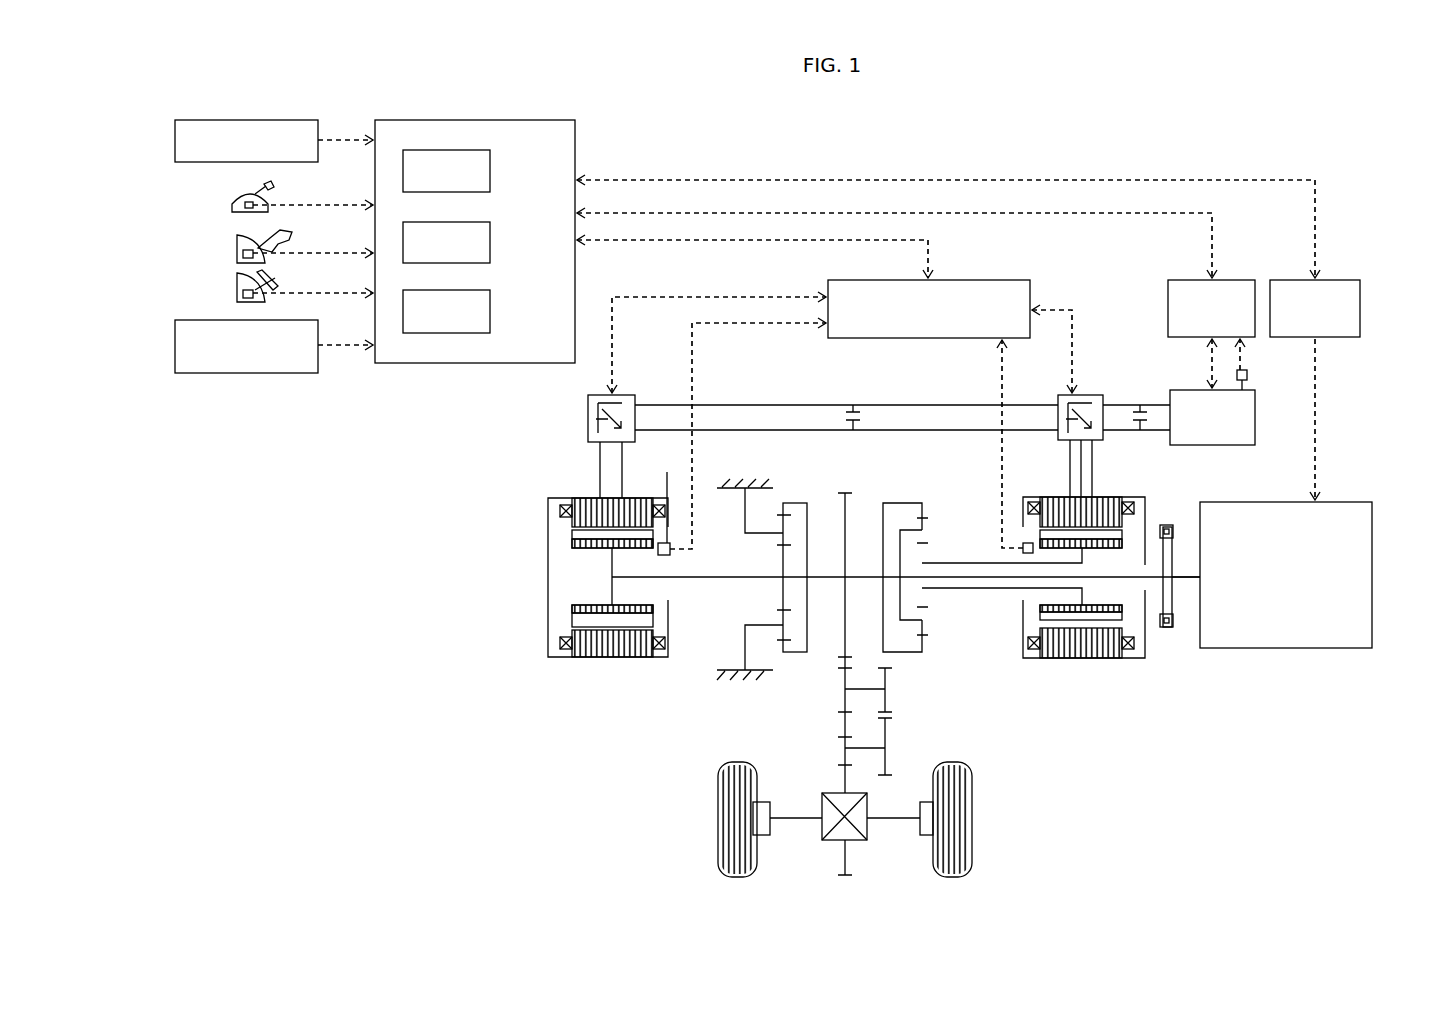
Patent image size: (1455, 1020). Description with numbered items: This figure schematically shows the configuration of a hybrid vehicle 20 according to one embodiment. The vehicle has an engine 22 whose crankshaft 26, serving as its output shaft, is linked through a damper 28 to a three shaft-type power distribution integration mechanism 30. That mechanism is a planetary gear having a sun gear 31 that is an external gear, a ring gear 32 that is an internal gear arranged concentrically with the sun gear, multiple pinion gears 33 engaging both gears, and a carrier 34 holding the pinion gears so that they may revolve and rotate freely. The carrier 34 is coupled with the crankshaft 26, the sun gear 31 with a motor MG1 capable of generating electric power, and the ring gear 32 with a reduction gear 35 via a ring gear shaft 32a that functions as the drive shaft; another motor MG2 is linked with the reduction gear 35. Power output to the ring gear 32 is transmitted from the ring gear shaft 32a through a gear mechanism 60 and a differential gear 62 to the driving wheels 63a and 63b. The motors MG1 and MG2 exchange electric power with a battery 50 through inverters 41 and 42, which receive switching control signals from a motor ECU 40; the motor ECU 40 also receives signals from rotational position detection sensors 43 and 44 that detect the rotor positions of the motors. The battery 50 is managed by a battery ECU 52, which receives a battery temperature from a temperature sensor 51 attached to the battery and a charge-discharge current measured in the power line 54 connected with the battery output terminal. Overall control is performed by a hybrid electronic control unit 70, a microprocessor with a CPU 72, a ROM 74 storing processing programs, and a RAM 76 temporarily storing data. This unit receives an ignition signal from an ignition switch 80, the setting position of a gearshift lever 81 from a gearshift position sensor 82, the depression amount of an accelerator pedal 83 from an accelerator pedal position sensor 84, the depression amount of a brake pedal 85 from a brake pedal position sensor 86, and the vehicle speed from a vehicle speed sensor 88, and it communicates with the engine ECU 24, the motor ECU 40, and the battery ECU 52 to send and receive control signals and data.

The hybrid vehicle 20 is at (1107, 148).
The engine 22 is at (1372, 535).
The engine ECU 24 is at (1330, 280).
The crankshaft 26 is at (1183, 577).
The damper 28 is at (1170, 628).
The power distribution integration mechanism 30 is at (982, 560).
The sun gear 31 is at (922, 592).
The ring gear 32 is at (925, 643).
The ring gear shaft 32a is at (822, 570).
The pinion gears 33 is at (923, 618).
The carrier 34 is at (893, 543).
The reduction gear 35 is at (788, 481).
The motor ECU 40 is at (973, 280).
The inverter 41 is at (1098, 395).
The inverter 42 is at (620, 395).
The rotational position detection sensor 43 is at (1023, 542).
The rotational position detection sensor 44 is at (737, 439).
The battery 50 is at (1212, 447).
The temperature sensor 51 is at (1247, 375).
The battery ECU 52 is at (1168, 280).
The power line 54 is at (910, 425).
The gear mechanism 60 is at (915, 705).
The differential gear 62 is at (867, 830).
The driving wheel 63a is at (718, 850).
The driving wheel 63b is at (972, 850).
The hybrid electronic control unit 70 is at (475, 221).
The CPU 72 is at (491, 171).
The ROM 74 is at (491, 241).
The RAM 76 is at (491, 311).
The ignition switch 80 is at (175, 135).
The gearshift lever 81 is at (238, 192).
The gearshift position sensor 82 is at (245, 205).
The accelerator pedal 83 is at (238, 243).
The accelerator pedal position sensor 84 is at (243, 254).
The brake pedal 85 is at (238, 292).
The brake pedal position sensor 86 is at (243, 294).
The vehicle speed sensor 88 is at (175, 343).
The motor MG1 is at (1085, 658).
The motor MG2 is at (588, 498).